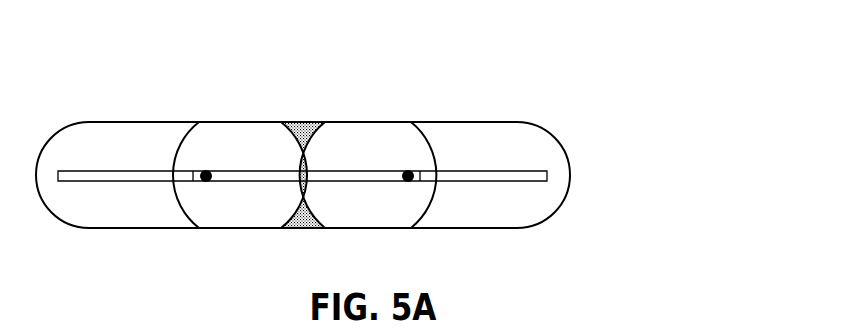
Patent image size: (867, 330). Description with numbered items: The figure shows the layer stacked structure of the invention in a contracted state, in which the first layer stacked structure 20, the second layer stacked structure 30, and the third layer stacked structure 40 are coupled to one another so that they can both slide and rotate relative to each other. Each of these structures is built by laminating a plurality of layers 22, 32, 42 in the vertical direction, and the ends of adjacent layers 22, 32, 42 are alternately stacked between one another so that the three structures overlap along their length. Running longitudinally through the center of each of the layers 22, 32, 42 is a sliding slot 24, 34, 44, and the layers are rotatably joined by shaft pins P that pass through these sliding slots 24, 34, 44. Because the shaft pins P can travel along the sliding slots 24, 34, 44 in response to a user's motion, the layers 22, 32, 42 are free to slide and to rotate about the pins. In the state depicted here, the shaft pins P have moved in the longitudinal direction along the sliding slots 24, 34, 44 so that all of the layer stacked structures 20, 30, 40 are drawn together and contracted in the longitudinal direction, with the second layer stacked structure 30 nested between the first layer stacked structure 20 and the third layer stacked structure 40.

The first layer stacked structure 20 is at (167, 150).
The layer 22 is at (132, 121).
The sliding slot 24 is at (93, 182).
The second layer stacked structure 30 is at (304, 150).
The layer 32 is at (320, 121).
The sliding slot 34 is at (260, 182).
The third layer stacked structure 40 is at (436, 150).
The layer 42 is at (490, 121).
The sliding slot 44 is at (500, 182).
The shaft pin P is at (206, 172).